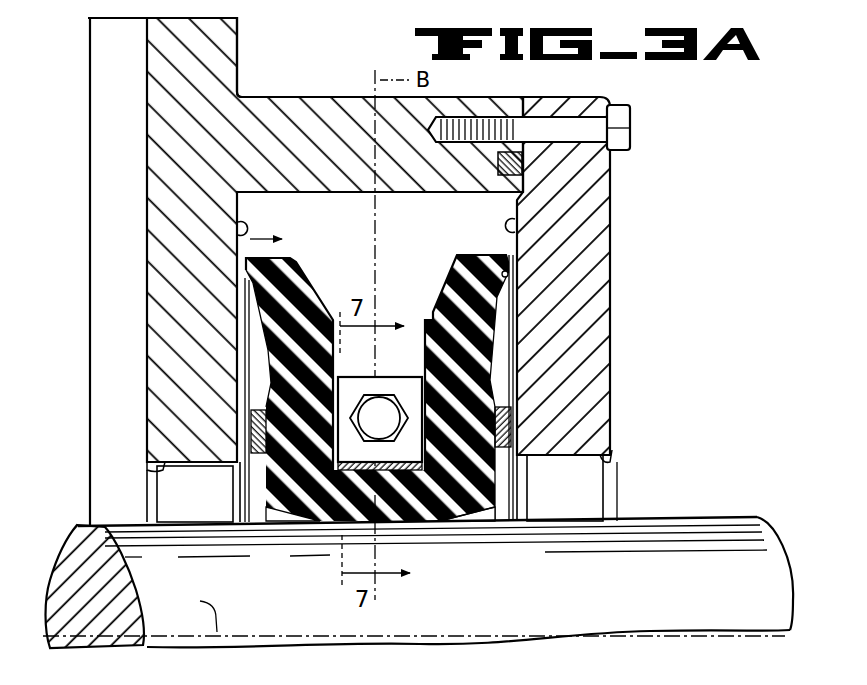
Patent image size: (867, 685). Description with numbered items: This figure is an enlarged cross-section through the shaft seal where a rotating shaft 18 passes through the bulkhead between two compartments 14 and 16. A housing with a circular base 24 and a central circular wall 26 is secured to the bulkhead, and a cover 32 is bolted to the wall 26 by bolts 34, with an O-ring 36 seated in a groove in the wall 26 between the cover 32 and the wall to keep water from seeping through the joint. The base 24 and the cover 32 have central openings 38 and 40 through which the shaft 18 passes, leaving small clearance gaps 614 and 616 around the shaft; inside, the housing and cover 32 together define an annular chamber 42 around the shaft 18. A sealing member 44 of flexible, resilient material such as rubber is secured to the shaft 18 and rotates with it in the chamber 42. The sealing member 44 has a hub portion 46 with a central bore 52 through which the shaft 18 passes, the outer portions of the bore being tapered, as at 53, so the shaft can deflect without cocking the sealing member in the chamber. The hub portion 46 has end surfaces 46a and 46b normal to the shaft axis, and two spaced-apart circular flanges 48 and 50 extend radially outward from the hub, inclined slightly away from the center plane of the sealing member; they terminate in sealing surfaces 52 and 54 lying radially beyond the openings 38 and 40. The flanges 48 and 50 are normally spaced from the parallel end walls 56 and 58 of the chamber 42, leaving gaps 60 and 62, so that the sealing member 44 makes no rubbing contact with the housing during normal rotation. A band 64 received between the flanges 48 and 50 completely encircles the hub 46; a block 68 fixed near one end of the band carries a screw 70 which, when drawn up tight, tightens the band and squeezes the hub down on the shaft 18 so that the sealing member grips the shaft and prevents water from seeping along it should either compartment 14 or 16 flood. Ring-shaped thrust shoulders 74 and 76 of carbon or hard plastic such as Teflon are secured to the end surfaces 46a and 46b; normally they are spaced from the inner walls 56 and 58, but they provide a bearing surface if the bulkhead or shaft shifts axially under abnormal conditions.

The compartment 14 is at (60, 333).
The compartment 16 is at (737, 199).
The rotating shaft 18 is at (595, 603).
The circular base 24 is at (237, 44).
The central circular wall 26 is at (283, 101).
The cover 32 is at (610, 194).
The bolts 34 is at (618, 118).
The O-ring 36 is at (521, 172).
The central opening 38 is at (152, 468).
The central opening 40 is at (612, 458).
The internal annular chamber 42 is at (245, 262).
The sealing member 44 is at (260, 478).
The hub portion 46 is at (285, 522).
The end surface 46a is at (248, 497).
The end surface 46b is at (497, 497).
The circular flange 48 is at (276, 333).
The circular flange 50 is at (490, 308).
The central bore 52 is at (246, 288).
The tapered bore portion 53 is at (470, 525).
The sealing surface 54 is at (512, 290).
The end wall surface 56 is at (238, 233).
The end wall surface 58 is at (515, 226).
The gap 60 is at (245, 273).
The gap 62 is at (510, 262).
The band 64 is at (366, 469).
The block 68 is at (403, 380).
The screw 70 is at (366, 401).
The thrust shoulder 74 is at (250, 432).
The thrust shoulder 76 is at (512, 413).
The gap 614 is at (170, 510).
The gap 616 is at (605, 497).